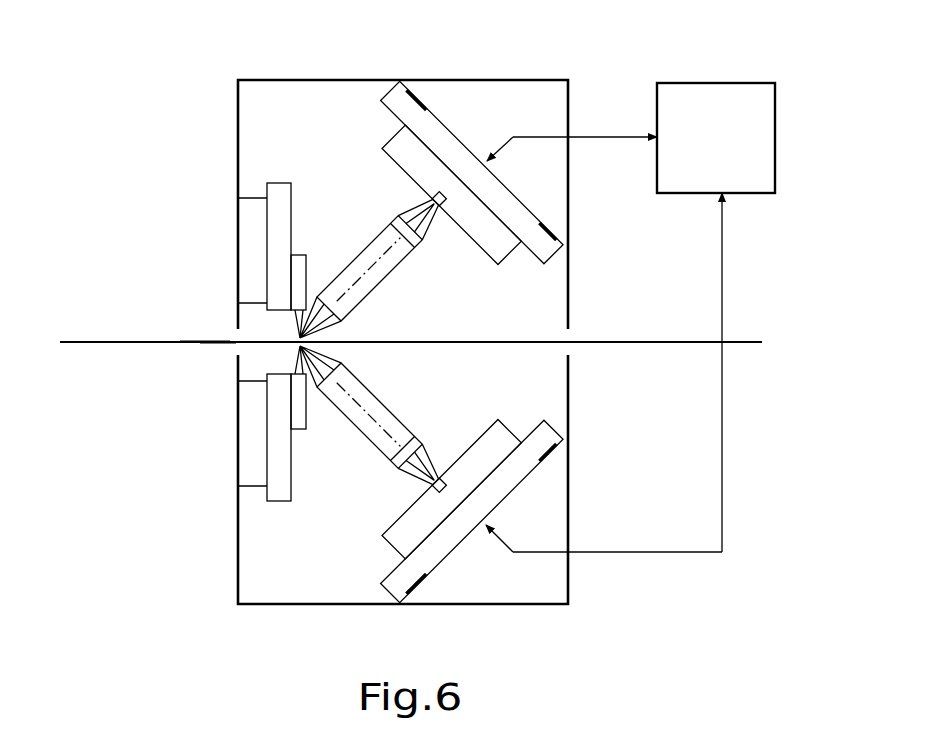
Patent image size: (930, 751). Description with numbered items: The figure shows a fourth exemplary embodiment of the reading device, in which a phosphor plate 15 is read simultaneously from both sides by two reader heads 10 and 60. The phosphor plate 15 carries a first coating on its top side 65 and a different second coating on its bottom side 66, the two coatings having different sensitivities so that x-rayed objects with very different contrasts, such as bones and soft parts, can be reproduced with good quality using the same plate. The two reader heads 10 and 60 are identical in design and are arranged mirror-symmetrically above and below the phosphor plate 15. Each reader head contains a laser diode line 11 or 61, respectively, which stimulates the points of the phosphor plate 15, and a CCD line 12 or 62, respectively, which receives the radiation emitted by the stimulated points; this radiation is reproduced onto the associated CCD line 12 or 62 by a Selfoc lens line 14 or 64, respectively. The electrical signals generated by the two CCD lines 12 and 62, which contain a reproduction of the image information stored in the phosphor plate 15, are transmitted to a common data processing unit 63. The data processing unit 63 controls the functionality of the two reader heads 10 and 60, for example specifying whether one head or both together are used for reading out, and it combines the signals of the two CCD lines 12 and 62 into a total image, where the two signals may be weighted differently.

The reader head 10 is at (281, 96).
The reader head 60 is at (278, 583).
The laser diode line 11 is at (298, 256).
The laser diode line 61 is at (297, 429).
The CCD line 12 is at (505, 250).
The CCD line 62 is at (503, 437).
The Selfoc lens line 14 is at (383, 280).
The Selfoc lens line 64 is at (378, 408).
The phosphor plate 15 is at (88, 341).
The top side 65 is at (196, 337).
The bottom side 66 is at (212, 346).
The data processing unit 63 is at (704, 88).